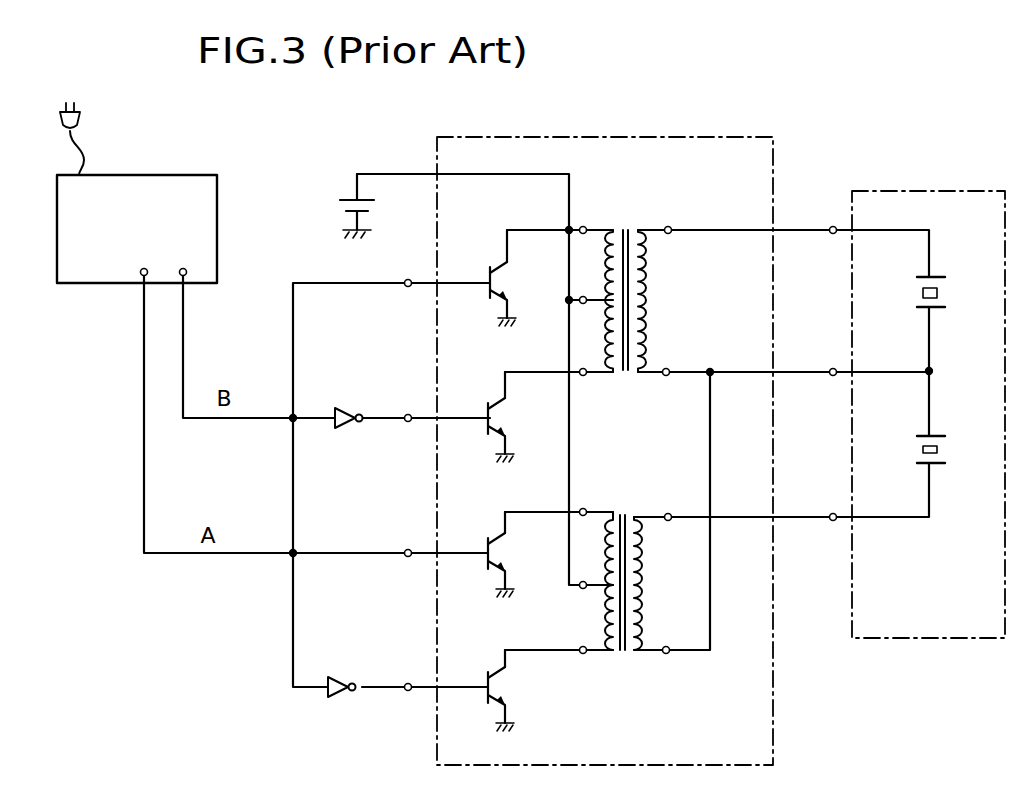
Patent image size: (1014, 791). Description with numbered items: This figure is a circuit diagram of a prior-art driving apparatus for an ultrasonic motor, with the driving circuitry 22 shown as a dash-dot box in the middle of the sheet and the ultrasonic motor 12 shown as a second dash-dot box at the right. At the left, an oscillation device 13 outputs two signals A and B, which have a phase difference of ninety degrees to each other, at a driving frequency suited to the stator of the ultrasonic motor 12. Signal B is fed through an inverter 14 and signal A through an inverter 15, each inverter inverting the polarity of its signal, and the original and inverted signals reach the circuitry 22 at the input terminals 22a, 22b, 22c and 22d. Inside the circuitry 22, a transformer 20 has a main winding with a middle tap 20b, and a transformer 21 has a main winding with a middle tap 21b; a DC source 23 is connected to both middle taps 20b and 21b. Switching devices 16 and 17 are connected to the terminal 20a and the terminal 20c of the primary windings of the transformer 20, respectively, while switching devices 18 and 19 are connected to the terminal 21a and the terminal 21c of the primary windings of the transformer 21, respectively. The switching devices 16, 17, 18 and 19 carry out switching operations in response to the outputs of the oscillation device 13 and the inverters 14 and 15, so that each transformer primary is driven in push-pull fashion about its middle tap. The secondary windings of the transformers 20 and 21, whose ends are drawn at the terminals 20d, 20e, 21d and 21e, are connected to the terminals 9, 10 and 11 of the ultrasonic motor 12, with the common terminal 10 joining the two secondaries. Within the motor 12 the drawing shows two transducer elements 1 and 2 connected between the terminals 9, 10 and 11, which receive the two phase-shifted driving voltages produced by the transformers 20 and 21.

The ultrasonic transducer 1 is at (941, 294).
The ultrasonic transducer 2 is at (941, 450).
The terminal 9 is at (833, 234).
The terminal 10 is at (831, 376).
The terminal 11 is at (832, 521).
The ultrasonic motor 12 is at (903, 191).
The oscillation device 13 is at (198, 175).
The inverter 14 is at (338, 424).
The inverter 15 is at (337, 678).
The switching device 16 is at (486, 292).
The switching device 17 is at (486, 428).
The switching device 18 is at (484, 563).
The switching device 19 is at (484, 697).
The transformer 20 is at (628, 226).
The terminal of primary windings 20a is at (586, 226).
The middle tap 20b is at (580, 304).
The terminal of primary windings 20c is at (585, 376).
The secondary winding terminal 20d is at (670, 226).
The secondary winding terminal 20e is at (667, 376).
The transformer 21 is at (628, 514).
The terminal of primary windings 21a is at (585, 508).
The middle tap 21b is at (580, 588).
The terminal of primary windings 21c is at (583, 654).
The secondary winding terminal 21d is at (670, 513).
The secondary winding terminal 21e is at (666, 654).
The circuitry 22 is at (724, 137).
The input terminal 22a is at (408, 287).
The input terminal 22b is at (408, 422).
The input terminal 22c is at (408, 557).
The input terminal 22d is at (408, 691).
The DC source 23 is at (340, 212).